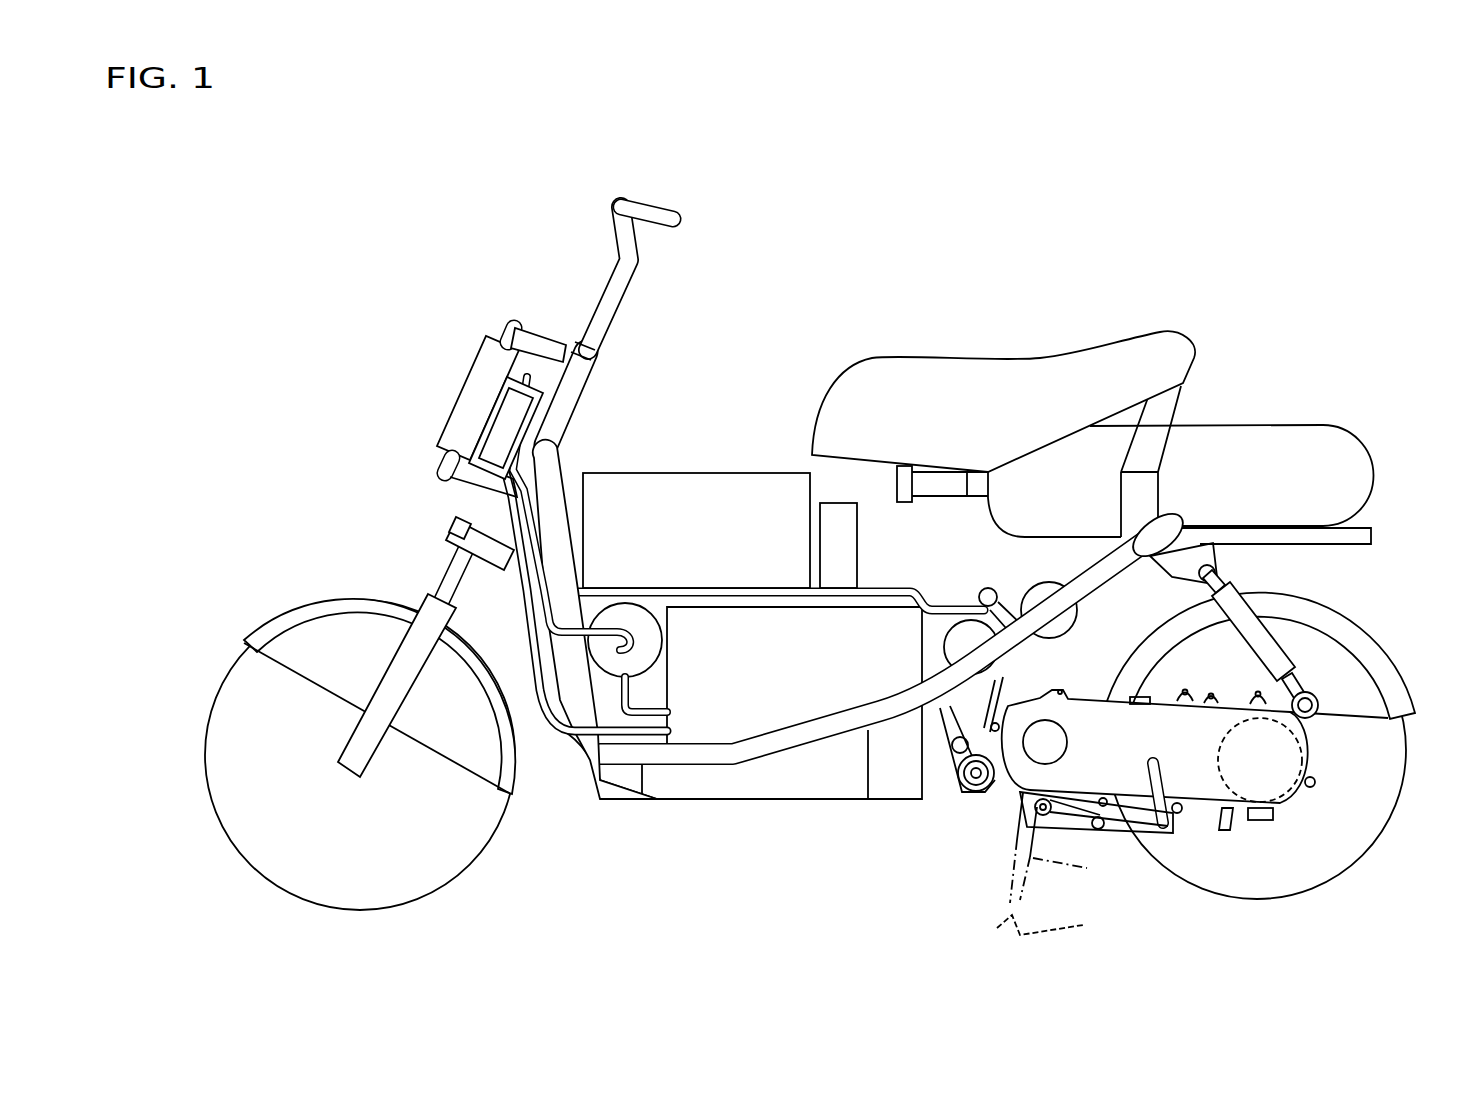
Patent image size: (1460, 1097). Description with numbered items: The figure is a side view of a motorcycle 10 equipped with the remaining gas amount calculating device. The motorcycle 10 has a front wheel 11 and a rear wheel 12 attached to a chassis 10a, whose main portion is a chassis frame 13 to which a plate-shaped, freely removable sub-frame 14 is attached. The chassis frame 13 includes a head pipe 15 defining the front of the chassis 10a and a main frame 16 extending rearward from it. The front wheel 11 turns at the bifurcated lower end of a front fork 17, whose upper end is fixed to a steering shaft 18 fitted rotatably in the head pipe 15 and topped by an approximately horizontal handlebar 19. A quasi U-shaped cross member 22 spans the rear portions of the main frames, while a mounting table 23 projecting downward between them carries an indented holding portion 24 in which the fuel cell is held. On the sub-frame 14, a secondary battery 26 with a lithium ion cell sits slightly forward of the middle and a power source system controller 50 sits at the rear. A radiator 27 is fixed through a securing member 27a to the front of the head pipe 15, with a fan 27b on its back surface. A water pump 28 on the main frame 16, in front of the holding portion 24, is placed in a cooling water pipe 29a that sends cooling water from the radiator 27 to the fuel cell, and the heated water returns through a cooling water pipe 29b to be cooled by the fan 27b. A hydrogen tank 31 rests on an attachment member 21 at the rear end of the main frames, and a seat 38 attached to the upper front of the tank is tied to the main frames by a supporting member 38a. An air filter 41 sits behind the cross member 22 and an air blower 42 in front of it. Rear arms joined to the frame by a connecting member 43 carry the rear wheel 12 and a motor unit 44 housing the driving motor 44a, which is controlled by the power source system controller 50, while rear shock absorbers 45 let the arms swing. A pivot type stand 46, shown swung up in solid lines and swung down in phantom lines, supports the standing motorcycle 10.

The motorcycle 10 is at (1225, 256).
The chassis 10a is at (812, 840).
The front wheel 11 is at (340, 754).
The rear wheel 12 is at (1327, 878).
The chassis frame 13 is at (861, 575).
The sub-frame 14 is at (937, 598).
The head pipe 15 is at (563, 411).
The main frame 16 is at (557, 463).
The front fork 17 is at (404, 683).
The steering shaft 18 is at (624, 291).
The handlebar 19 is at (656, 208).
The attachment member 21 is at (1368, 534).
The cross member 22 is at (990, 589).
The mounting table 23 is at (743, 783).
The holding portion 24 is at (773, 620).
The secondary battery 26 is at (708, 485).
The radiator 27 is at (458, 421).
The securing member 27a is at (537, 343).
The fan 27b is at (507, 394).
The water pump 28 is at (640, 657).
The cooling water pipe 29a is at (540, 568).
The cooling water pipe 29b is at (523, 598).
The hydrogen tank 31 is at (1326, 424).
The seat 38 is at (1157, 330).
The supporting member 38a is at (1181, 405).
The air filter 41 is at (1062, 648).
The air blower 42 is at (955, 620).
The connecting member 43 is at (997, 683).
The motor unit 44 is at (1195, 793).
The driving motor 44a is at (1309, 747).
The rear shock absorber 45 is at (1232, 590).
The stand 46 is at (1118, 830).
The power source system controller 50 is at (841, 512).